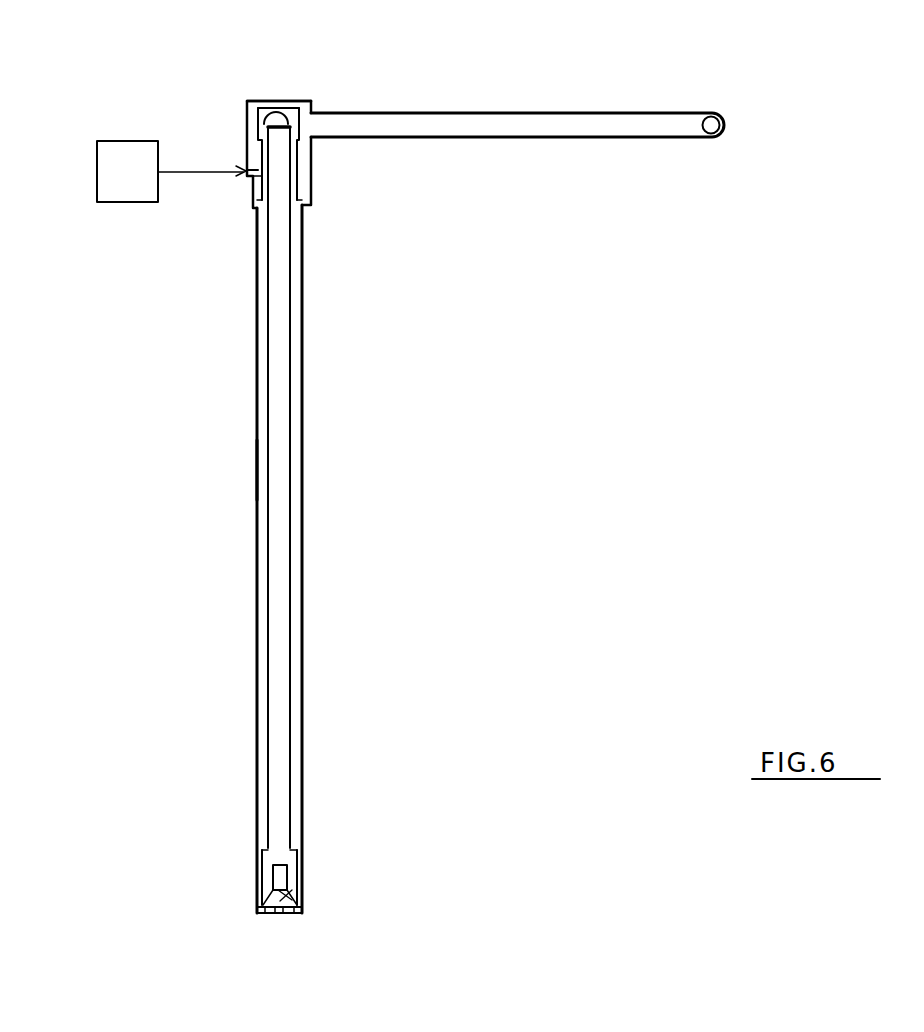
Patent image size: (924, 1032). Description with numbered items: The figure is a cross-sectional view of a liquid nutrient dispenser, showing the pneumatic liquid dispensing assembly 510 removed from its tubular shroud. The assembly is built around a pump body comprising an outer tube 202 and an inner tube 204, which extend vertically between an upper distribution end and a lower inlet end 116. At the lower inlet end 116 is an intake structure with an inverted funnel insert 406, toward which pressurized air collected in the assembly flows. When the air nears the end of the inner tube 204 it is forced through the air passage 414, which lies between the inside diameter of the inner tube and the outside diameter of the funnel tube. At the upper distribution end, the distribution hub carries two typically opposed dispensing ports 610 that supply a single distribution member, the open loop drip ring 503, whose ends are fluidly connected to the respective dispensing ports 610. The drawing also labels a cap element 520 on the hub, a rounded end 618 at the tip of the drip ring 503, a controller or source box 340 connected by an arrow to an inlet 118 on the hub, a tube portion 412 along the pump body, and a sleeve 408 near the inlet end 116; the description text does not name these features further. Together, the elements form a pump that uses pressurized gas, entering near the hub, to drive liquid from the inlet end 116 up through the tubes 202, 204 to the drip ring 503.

The pneumatic liquid dispensing assembly 510 is at (775, 64).
The drip ring 503 is at (518, 114).
The ball end of arm 618 is at (654, 138).
The dispensing ports 610 is at (275, 116).
The top cap 520 is at (283, 101).
The air passage 414 is at (306, 199).
The controller 340 is at (171, 171).
The inlet port 118 is at (251, 178).
The outer tube 202 is at (258, 438).
The inner tube 204 is at (268, 492).
The outer tube 412 is at (303, 511).
The bottom inner sleeve 408 is at (303, 848).
The funnel insert 406 is at (288, 894).
The lower inlet end 116 is at (272, 921).